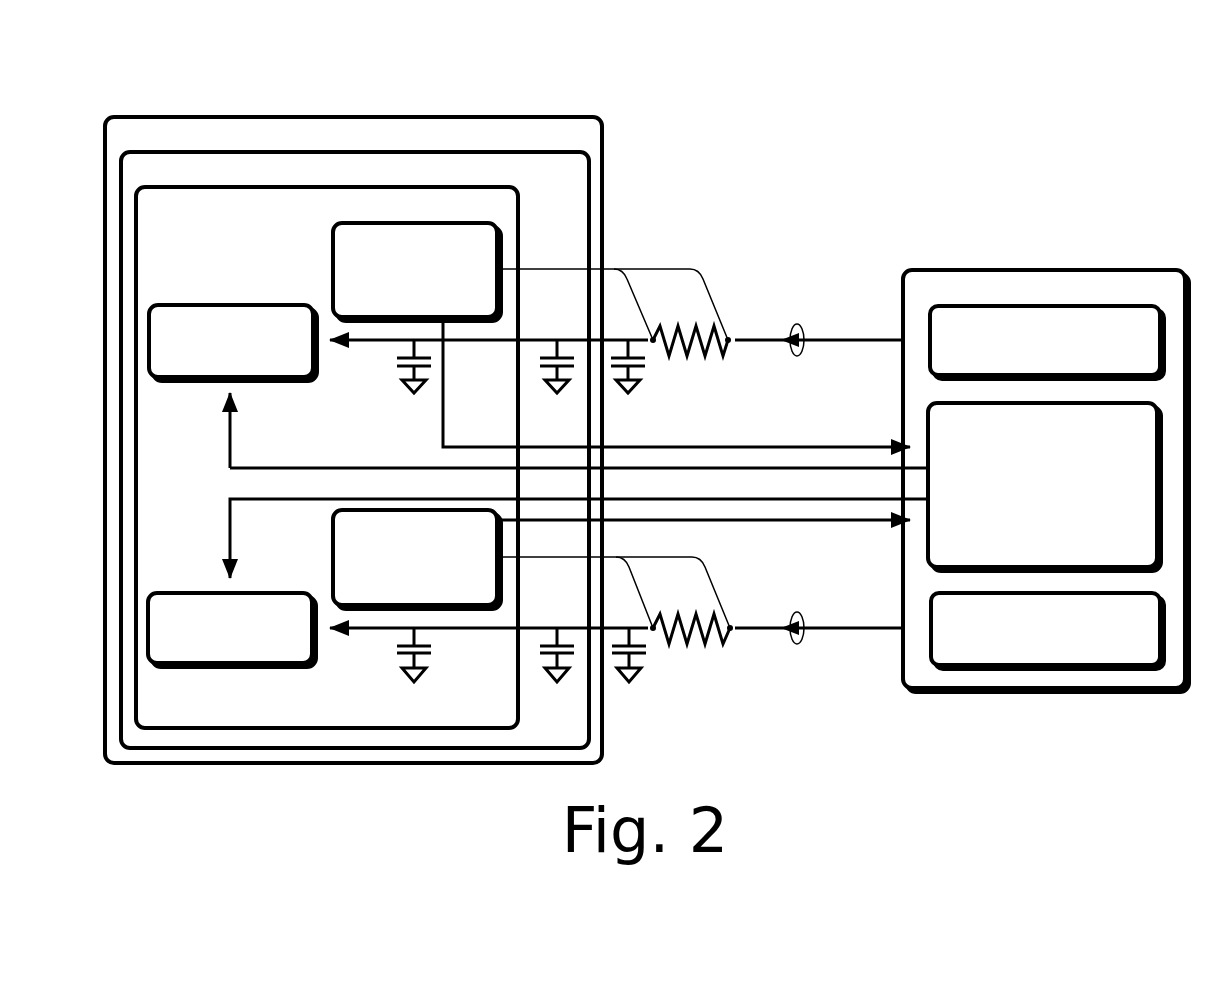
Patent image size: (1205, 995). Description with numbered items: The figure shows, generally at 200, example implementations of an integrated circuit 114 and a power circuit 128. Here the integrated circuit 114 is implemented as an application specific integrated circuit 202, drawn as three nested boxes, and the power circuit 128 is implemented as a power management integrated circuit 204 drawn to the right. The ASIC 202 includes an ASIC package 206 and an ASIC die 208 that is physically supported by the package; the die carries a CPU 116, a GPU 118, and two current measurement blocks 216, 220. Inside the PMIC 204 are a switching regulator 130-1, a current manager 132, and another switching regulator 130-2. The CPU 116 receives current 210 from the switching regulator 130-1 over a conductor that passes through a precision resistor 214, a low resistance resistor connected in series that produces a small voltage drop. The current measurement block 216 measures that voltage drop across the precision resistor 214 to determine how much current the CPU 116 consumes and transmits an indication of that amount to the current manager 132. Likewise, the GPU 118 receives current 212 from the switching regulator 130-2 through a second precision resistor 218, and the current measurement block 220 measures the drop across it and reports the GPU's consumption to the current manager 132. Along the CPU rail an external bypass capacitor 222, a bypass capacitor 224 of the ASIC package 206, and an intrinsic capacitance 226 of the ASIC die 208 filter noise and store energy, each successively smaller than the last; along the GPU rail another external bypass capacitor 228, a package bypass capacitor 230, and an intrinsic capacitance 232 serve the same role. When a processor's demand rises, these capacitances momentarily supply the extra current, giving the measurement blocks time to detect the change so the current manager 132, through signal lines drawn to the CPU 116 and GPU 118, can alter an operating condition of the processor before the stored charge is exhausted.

The example implementations 200 is at (1054, 106).
The integrated circuit 114 is at (525, 93).
The application specific integrated circuit 202 is at (353, 440).
The ASIC package 206 is at (355, 450).
The ASIC die 208 is at (327, 457).
The current measurement block 216 is at (417, 272).
The current measurement block 220 is at (417, 559).
The CPU 116 is at (233, 343).
The GPU 118 is at (232, 630).
The power circuit 128 is at (1108, 246).
The power management integrated circuit 204 is at (1046, 481).
The switching regulator 130-1 is at (1047, 342).
The switching regulator 130-2 is at (1047, 631).
The current manager 132 is at (1044, 487).
The current 210 is at (800, 323).
The current 212 is at (800, 611).
The precision resistor 214 is at (724, 376).
The precision resistor 218 is at (724, 664).
The external bypass capacitor 222 is at (656, 378).
The bypass capacitor 224 is at (535, 375).
The intrinsic capacitance 226 is at (394, 379).
The external bypass capacitor 228 is at (655, 671).
The bypass capacitor 230 is at (534, 662).
The intrinsic capacitance 232 is at (392, 666).